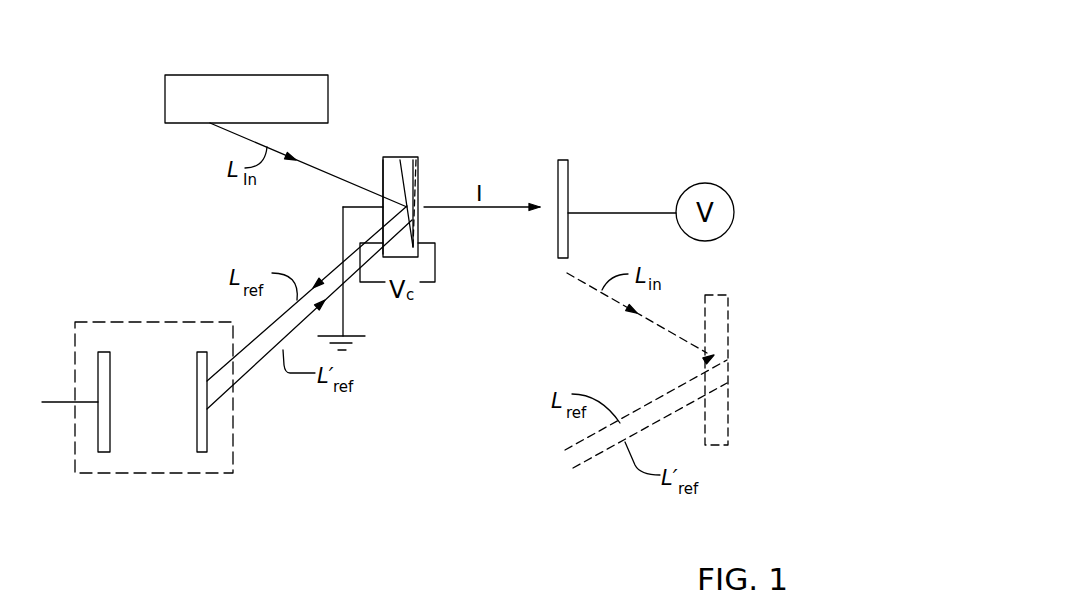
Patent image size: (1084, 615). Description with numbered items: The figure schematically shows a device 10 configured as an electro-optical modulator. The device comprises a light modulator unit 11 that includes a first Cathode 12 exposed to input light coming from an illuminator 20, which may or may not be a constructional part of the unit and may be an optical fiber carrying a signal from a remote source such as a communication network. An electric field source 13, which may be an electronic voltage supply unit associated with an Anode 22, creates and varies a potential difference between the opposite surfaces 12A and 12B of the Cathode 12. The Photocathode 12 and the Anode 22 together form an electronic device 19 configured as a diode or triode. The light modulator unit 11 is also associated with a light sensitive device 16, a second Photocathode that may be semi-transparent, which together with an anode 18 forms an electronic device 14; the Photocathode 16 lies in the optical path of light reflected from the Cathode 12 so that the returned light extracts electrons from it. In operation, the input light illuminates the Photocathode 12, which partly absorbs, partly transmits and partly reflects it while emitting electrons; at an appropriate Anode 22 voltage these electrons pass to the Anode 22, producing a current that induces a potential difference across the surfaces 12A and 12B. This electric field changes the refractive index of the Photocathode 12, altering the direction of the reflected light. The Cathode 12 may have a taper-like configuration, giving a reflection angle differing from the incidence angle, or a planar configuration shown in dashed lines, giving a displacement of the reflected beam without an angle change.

The device 10 is at (673, 93).
The light modulator unit 11 is at (405, 100).
The Cathode 12 is at (433, 188).
The opposite surface of the Cathode 12A is at (382, 178).
The opposite surface of the Cathode 12B is at (411, 158).
The electric field source 13 is at (153, 70).
The electronic device 14 is at (90, 473).
The light sensitive device 16 is at (200, 430).
The anode 18 is at (112, 360).
The electronic device 19 is at (463, 238).
The illuminator 20 is at (240, 75).
The Anode 22 is at (563, 160).